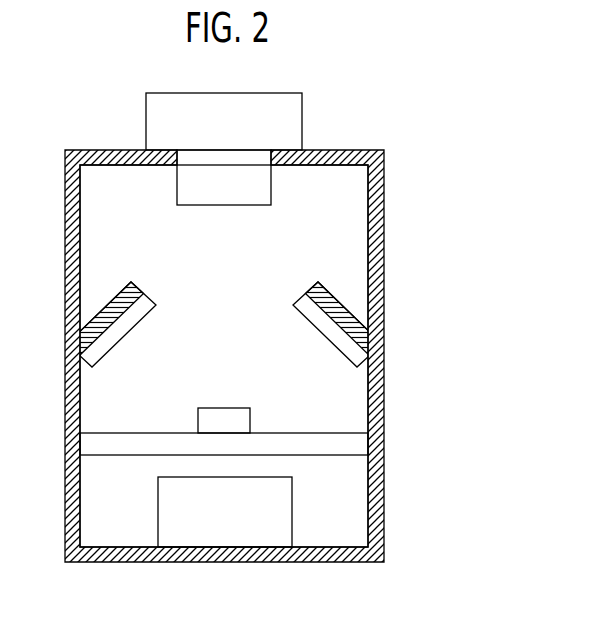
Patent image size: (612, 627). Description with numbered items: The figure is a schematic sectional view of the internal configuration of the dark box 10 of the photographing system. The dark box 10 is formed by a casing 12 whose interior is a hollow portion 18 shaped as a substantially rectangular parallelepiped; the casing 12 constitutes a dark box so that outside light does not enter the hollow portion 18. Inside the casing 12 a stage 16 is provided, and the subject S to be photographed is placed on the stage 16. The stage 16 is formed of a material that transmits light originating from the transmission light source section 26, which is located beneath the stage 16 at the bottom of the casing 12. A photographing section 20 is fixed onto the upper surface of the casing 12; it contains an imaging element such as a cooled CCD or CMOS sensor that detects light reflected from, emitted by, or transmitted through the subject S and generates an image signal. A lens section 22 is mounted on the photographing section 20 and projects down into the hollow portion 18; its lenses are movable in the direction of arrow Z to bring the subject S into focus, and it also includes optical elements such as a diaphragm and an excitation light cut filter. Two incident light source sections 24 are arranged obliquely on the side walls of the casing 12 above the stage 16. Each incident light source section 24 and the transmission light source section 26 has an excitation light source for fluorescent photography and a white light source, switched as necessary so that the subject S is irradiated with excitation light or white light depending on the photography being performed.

The dark box 10 is at (390, 75).
The casing 12 is at (375, 252).
The stage 16 is at (360, 444).
The hollow portion 18 is at (357, 216).
The photographing section 20 is at (277, 98).
The lens section 22 is at (238, 204).
The incident light source section 24 is at (333, 328).
The transmission light source section 26 is at (238, 537).
The subject S is at (240, 414).
The arrow Z direction Z is at (298, 181).